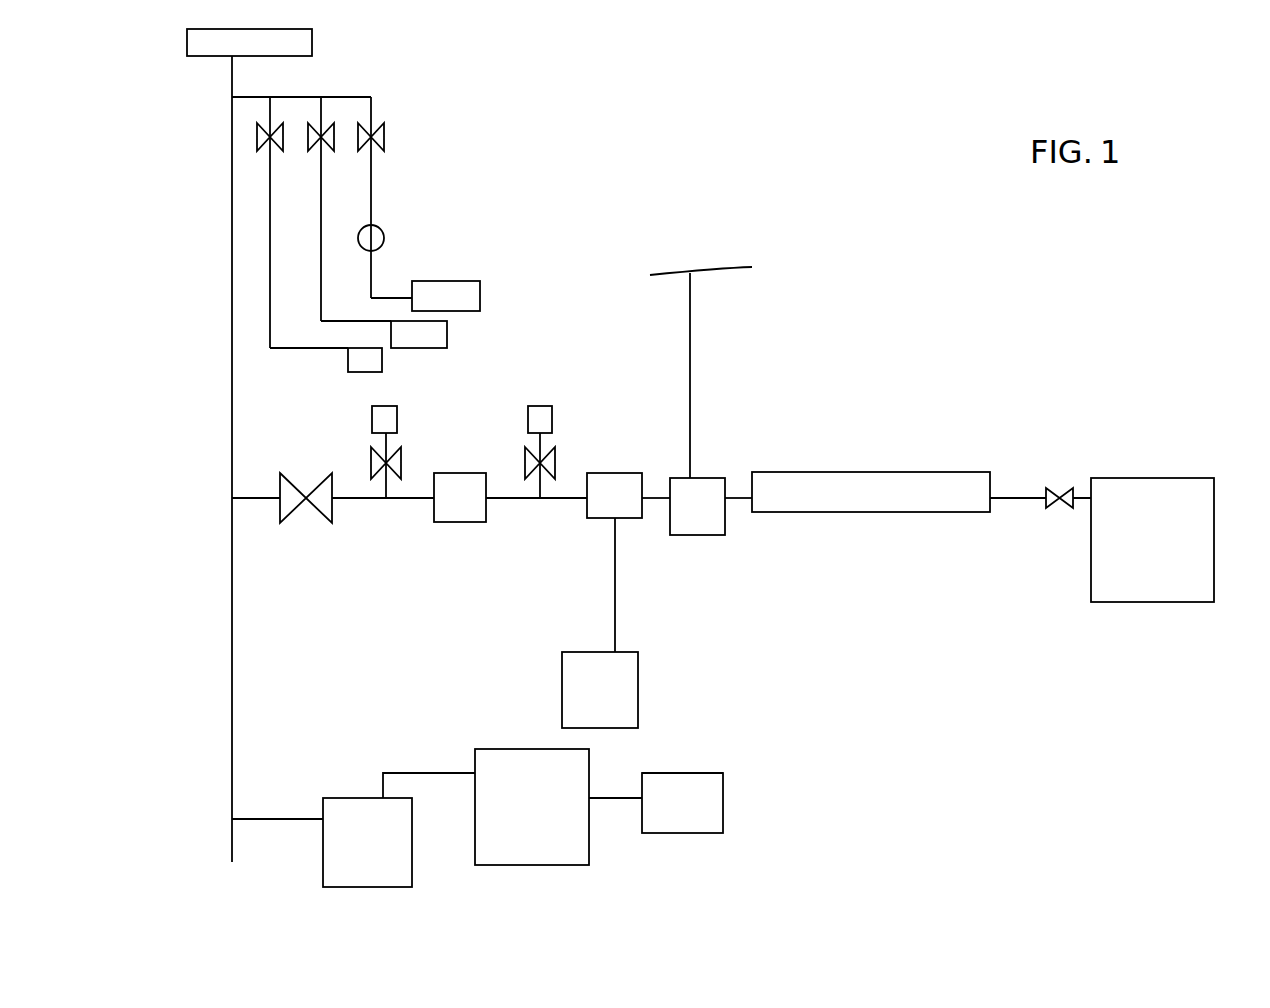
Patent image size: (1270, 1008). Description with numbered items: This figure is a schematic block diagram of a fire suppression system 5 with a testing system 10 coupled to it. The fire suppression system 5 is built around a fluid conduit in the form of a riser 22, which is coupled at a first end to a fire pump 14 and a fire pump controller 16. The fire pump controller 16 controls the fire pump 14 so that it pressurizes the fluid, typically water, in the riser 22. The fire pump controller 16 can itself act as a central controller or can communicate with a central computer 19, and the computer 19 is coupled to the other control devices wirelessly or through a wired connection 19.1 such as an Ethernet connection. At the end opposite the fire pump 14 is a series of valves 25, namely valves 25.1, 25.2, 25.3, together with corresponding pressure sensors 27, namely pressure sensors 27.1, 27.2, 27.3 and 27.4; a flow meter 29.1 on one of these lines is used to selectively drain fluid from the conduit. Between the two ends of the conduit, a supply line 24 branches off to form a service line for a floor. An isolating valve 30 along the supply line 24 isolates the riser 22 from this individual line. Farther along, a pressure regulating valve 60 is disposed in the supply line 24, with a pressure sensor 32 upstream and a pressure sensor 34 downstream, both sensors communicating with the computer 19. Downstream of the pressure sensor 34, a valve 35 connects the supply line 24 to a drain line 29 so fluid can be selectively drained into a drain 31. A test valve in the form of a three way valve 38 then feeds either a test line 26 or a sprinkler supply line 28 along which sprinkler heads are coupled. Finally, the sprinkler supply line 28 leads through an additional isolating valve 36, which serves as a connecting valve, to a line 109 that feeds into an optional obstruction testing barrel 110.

The fire suppression system 5 is at (269, 666).
The testing system 10 is at (708, 175).
The fire pump 14 is at (353, 798).
The fire pump controller 16 is at (505, 749).
The computer 19 is at (683, 833).
The wired connection 19.1 is at (688, 772).
The riser 22 is at (230, 598).
The supply line 24 is at (415, 498).
The series of valves 25 is at (408, 125).
The valve 25.1 is at (281, 150).
The valve 25.2 is at (334, 150).
The valve 25.3 is at (384, 149).
The test line 26 is at (690, 333).
The pressure sensors 27 is at (511, 215).
The pressure sensor 27.1 is at (382, 372).
The pressure sensor 27.2 is at (447, 333).
The pressure sensor 27.3 is at (473, 281).
The pressure sensor 27.4 is at (312, 43).
The sprinkler supply line 28 is at (852, 478).
The drain line 29 is at (615, 604).
The flow meter 29.1 is at (383, 232).
The isolating valve 30 is at (329, 473).
The drain 31 is at (638, 685).
The pressure sensor 32 is at (424, 445).
The pressure sensor 34 is at (569, 434).
The valve 35 is at (630, 478).
The isolating valve 36 is at (1066, 492).
The three way valve 38 is at (716, 478).
The pressure regulating valve 60 is at (480, 522).
The line 109 is at (1089, 500).
The obstruction testing barrel 110 is at (1186, 478).